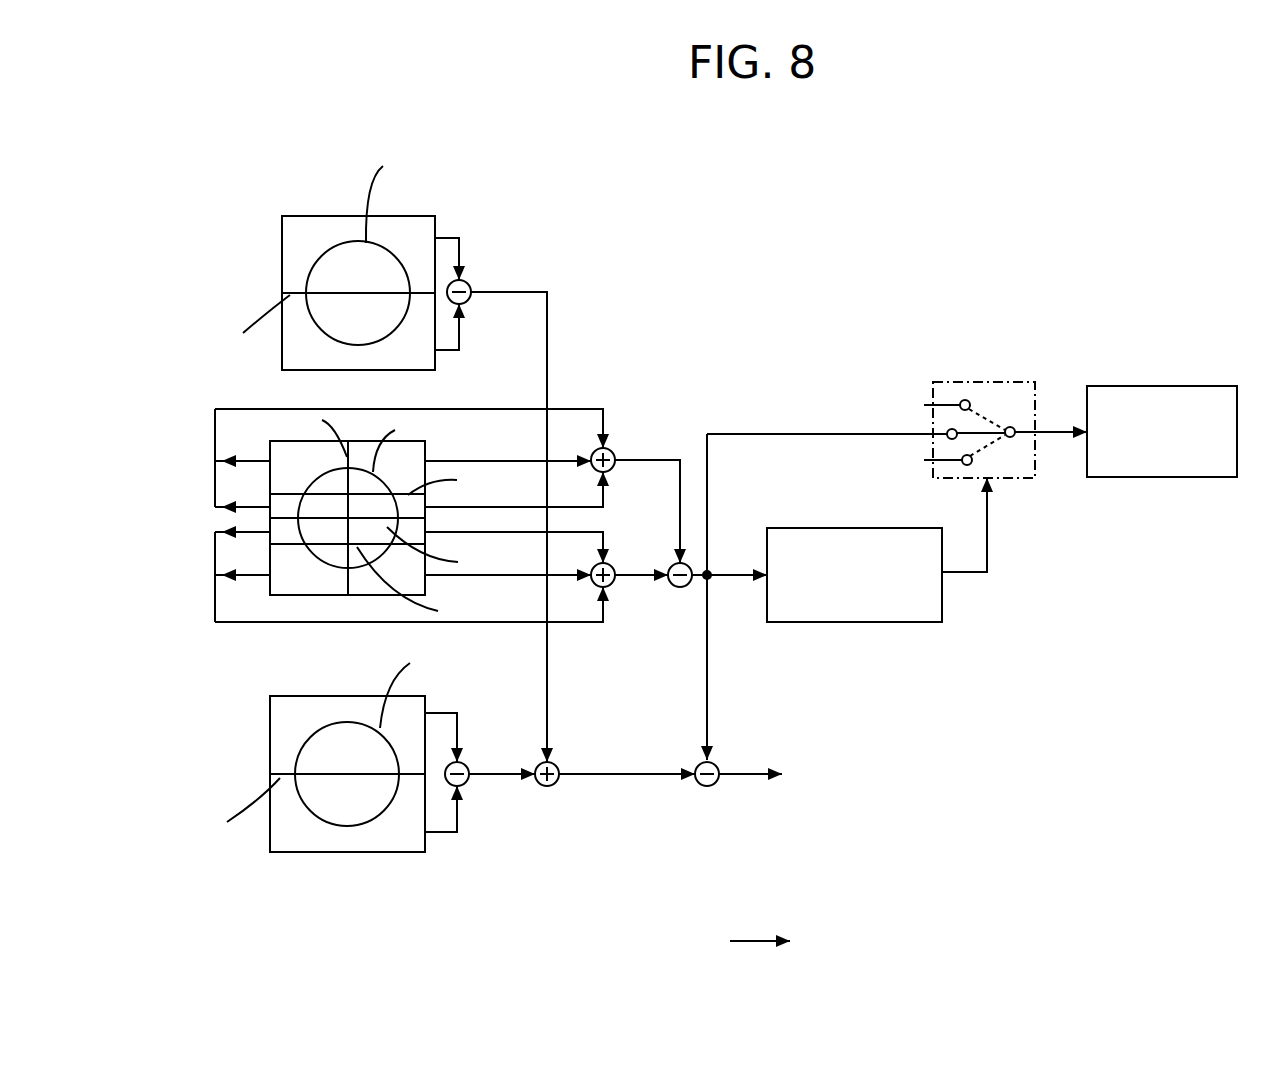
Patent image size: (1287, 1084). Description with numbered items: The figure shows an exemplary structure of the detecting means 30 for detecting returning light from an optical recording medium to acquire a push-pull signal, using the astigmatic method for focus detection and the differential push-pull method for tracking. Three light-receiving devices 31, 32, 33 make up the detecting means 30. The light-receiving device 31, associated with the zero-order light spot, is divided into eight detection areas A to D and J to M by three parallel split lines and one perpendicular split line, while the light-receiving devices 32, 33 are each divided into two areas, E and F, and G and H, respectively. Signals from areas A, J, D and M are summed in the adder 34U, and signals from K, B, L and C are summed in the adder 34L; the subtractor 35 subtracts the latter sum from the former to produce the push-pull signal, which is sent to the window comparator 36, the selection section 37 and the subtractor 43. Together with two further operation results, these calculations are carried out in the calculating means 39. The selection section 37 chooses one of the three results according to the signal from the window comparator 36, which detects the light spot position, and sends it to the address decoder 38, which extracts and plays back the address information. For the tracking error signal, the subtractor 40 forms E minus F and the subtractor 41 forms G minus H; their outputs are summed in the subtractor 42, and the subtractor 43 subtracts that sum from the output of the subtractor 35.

The detecting means 30 is at (1156, 104).
The light-receiving device 31 is at (427, 447).
The light-receiving device 32 is at (282, 258).
The light-receiving device 33 is at (270, 733).
The adder 34U is at (612, 448).
The adder 34L is at (610, 590).
The subtractor 35 is at (678, 590).
The window comparator 36 is at (855, 622).
The selection section 37 is at (995, 380).
The address decoder 38 is at (1150, 386).
The calculating means 39 is at (588, 471).
The subtractor 40 is at (469, 287).
The subtractor 41 is at (468, 787).
The subtractor 42 is at (548, 790).
The subtractor 43 is at (710, 787).